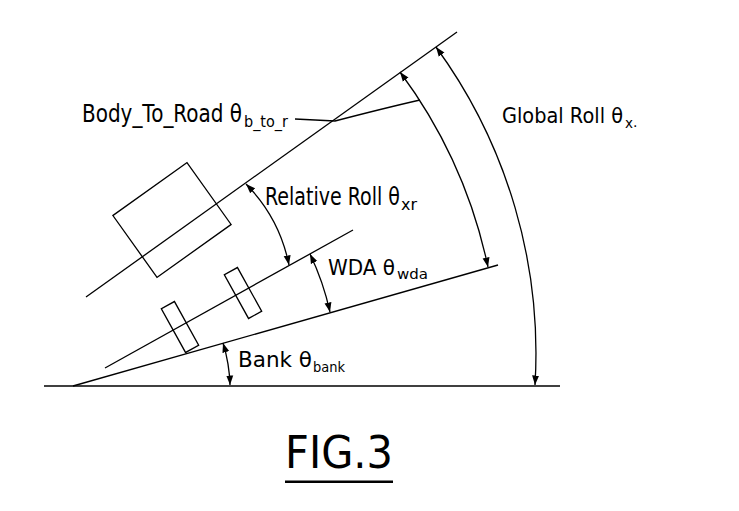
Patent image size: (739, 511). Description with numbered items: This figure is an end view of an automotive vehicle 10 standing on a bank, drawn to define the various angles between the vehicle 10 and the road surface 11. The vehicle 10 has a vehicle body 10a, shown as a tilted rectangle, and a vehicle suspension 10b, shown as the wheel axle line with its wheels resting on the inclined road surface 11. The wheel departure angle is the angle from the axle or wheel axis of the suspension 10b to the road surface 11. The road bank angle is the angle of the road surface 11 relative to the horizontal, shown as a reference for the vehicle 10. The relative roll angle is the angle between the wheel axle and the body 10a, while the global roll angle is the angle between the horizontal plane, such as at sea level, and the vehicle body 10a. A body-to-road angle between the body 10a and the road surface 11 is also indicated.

The vehicle 10 is at (70, 246).
The vehicle body 10a is at (152, 186).
The vehicle suspension 10b is at (253, 262).
The road surface 11 is at (375, 300).